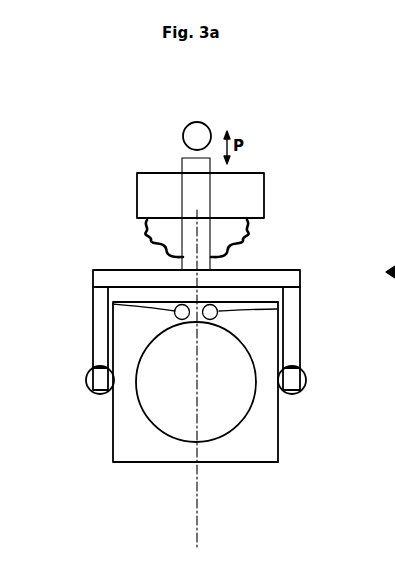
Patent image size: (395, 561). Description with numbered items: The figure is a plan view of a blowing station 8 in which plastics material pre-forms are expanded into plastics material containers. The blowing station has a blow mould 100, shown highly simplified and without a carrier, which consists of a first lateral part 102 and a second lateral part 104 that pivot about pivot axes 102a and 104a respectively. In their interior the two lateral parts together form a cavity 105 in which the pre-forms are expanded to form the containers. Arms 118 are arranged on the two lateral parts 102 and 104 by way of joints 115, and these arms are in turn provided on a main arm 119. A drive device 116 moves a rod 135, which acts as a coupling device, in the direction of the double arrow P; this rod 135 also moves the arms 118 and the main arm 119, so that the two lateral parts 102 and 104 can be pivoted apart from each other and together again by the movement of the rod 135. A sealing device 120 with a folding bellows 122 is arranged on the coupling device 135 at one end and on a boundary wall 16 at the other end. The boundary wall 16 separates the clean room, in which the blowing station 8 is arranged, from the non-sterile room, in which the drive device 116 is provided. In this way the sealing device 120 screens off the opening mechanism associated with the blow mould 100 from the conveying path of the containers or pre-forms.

The blowing station 8 is at (318, 256).
The boundary wall 16 is at (155, 197).
The blow mould 100 is at (291, 437).
The first lateral part 102 is at (142, 447).
The pivot axis 102a is at (113, 310).
The second lateral part 104 is at (255, 455).
The pivot axis 104a is at (300, 310).
The cavity 105 is at (213, 420).
The joints 115 is at (304, 377).
The drive device 116 is at (240, 97).
The arms 118 is at (292, 344).
The main arm 119 is at (127, 274).
The sealing device 120 is at (235, 247).
The folding bellows 122 is at (147, 244).
The rod 135 is at (203, 193).